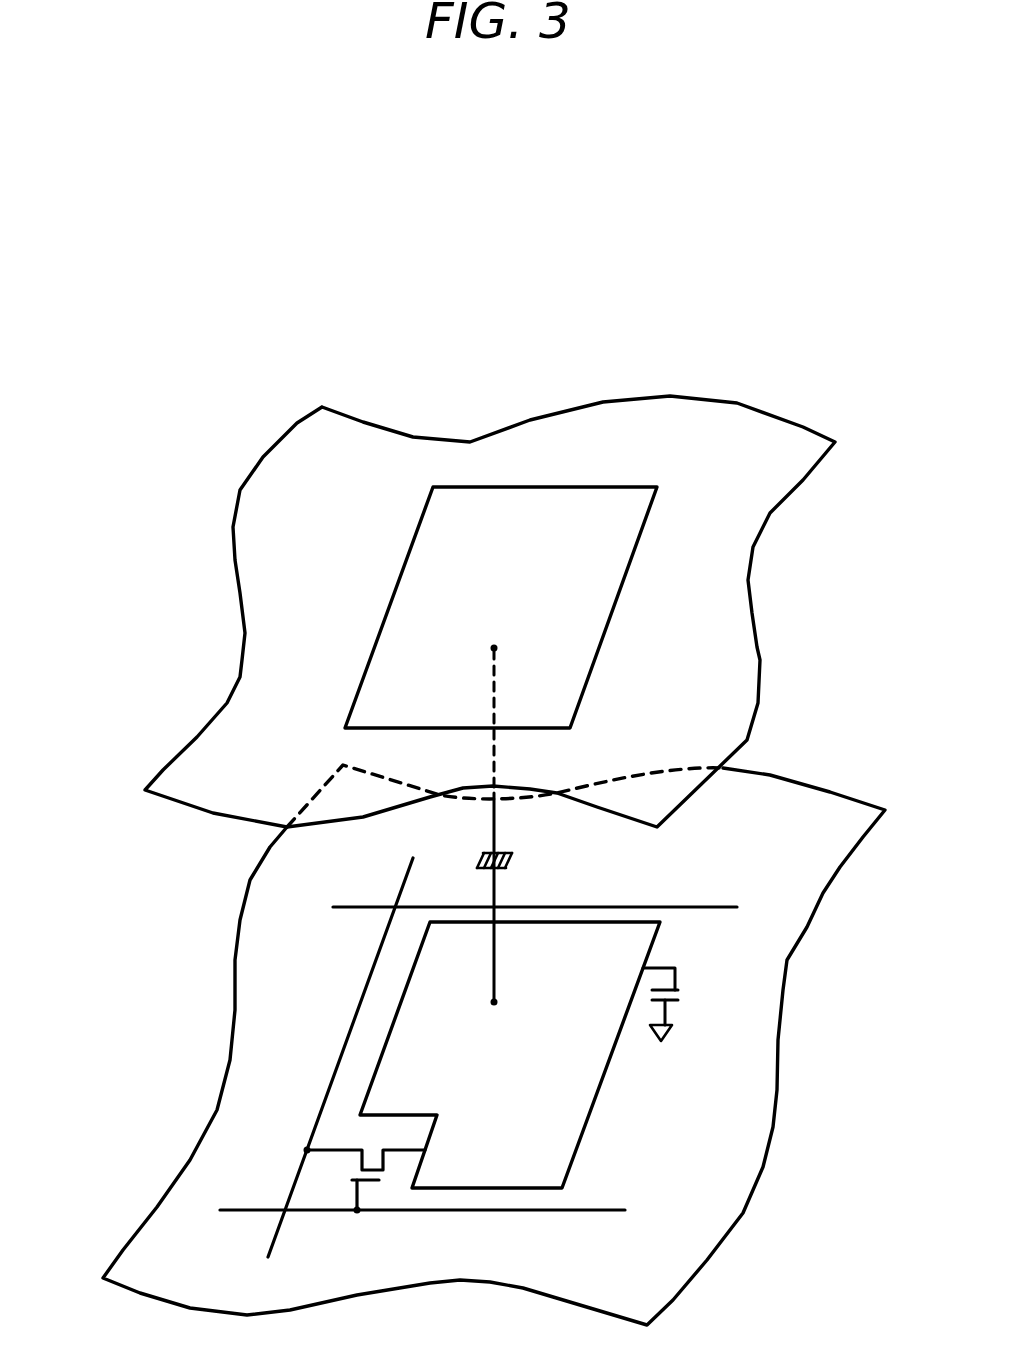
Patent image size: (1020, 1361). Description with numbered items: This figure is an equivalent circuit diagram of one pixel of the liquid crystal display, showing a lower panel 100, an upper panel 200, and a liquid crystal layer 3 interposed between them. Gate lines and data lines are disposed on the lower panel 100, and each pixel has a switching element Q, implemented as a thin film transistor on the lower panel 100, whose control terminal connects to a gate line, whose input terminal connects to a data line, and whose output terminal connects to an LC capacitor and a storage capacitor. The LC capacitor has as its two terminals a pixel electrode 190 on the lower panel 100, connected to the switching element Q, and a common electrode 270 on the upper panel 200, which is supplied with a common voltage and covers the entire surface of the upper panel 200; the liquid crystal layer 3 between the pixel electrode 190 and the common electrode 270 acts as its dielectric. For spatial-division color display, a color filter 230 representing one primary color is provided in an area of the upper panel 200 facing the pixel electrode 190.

The liquid crystal layer 3 is at (131, 918).
The lower panel 100 is at (800, 1018).
The upper panel 200 is at (517, 611).
The pixel electrode 190 is at (587, 1115).
The color filter 230 is at (590, 686).
The common electrode 270 is at (751, 583).